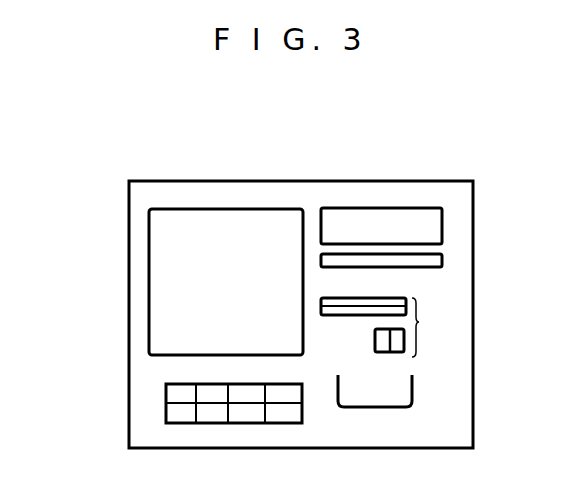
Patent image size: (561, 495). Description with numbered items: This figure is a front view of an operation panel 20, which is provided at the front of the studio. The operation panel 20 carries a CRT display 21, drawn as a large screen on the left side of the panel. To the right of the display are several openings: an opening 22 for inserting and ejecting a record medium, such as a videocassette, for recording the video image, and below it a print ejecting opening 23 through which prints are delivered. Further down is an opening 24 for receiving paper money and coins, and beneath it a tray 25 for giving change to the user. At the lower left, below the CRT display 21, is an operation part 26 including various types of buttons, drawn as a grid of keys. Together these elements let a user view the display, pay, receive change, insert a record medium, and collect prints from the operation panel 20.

The operation panel 20 is at (451, 178).
The CRT display 21 is at (218, 218).
The opening 22 is at (383, 218).
The print ejecting opening 23 is at (440, 262).
The opening 24 is at (420, 322).
The tray 25 is at (412, 398).
The operation part 26 is at (165, 395).